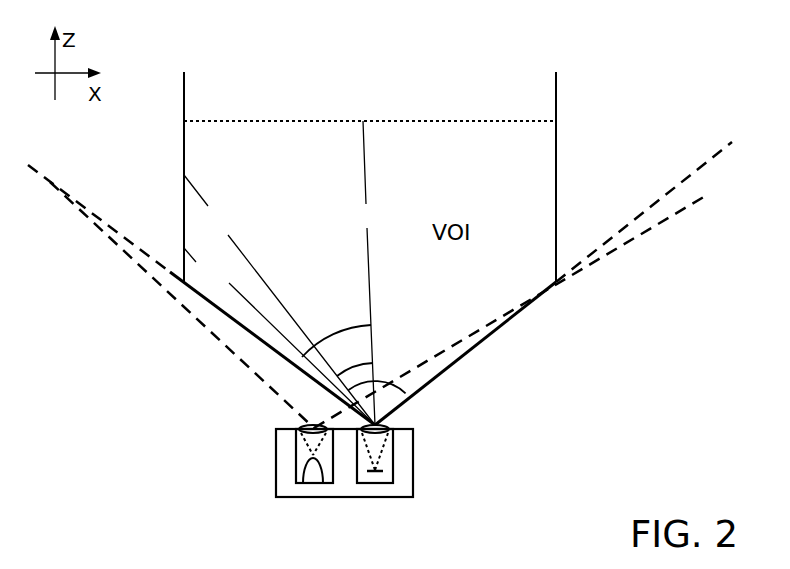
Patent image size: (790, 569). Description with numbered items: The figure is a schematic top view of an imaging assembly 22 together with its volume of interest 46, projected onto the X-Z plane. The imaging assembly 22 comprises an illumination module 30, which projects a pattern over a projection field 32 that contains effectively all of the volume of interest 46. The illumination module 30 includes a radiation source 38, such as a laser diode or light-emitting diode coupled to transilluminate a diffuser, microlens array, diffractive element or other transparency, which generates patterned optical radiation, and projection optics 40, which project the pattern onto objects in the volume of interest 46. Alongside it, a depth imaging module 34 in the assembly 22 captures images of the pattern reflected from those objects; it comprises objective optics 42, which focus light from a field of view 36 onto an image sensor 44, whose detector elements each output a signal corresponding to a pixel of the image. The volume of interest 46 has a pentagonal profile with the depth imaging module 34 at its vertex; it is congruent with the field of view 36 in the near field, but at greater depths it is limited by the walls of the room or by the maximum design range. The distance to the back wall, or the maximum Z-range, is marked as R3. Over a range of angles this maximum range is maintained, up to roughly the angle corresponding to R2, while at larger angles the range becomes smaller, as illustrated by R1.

The imaging assembly 22 is at (414, 447).
The illumination module 30 is at (300, 458).
The projection field 32 is at (205, 324).
The depth imaging module 34 is at (382, 485).
The field of view 36 is at (653, 197).
The radiation source 38 is at (298, 473).
The projection optics 40 is at (301, 426).
The objective optics 42 is at (388, 427).
The image sensor 44 is at (392, 462).
The volume of interest 46 is at (556, 150).
The range at large angle R1 is at (279, 336).
The angle limit of maximum range R2 is at (279, 300).
The distance to back wall R3 is at (364, 273).